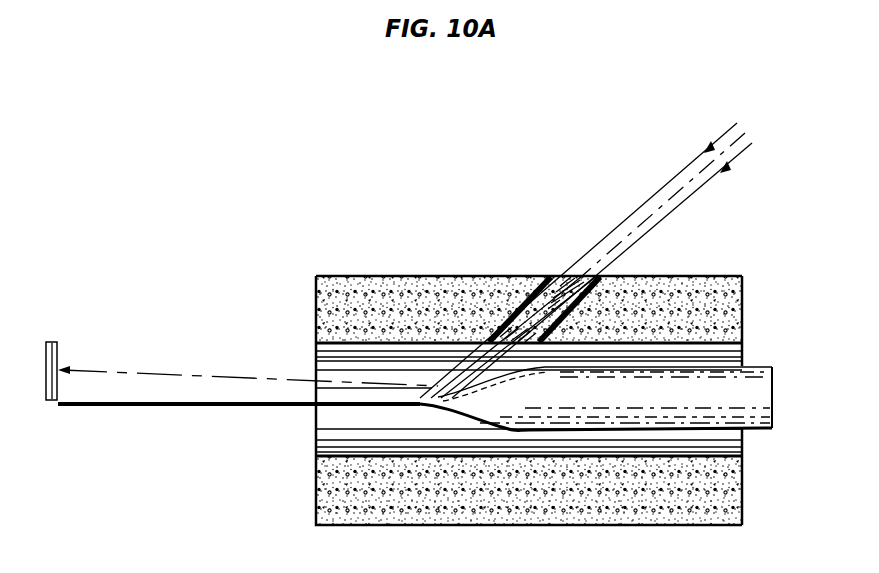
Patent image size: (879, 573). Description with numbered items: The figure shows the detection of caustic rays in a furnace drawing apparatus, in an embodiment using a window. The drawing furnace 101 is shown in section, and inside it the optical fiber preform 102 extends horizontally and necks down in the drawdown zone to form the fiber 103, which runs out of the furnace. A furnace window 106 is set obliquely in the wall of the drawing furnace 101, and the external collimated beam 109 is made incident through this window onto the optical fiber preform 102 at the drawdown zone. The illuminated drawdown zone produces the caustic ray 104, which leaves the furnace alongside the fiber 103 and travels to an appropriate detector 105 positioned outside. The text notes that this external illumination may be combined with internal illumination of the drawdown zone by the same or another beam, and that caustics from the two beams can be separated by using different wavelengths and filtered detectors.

The drawing furnace 101 is at (326, 498).
The optical fiber preform 102 is at (750, 376).
The fiber 103 is at (207, 408).
The caustic ray 104 is at (266, 380).
The detector 105 is at (57, 350).
The furnace window 106 is at (546, 276).
The external collimated beam 109 is at (660, 188).